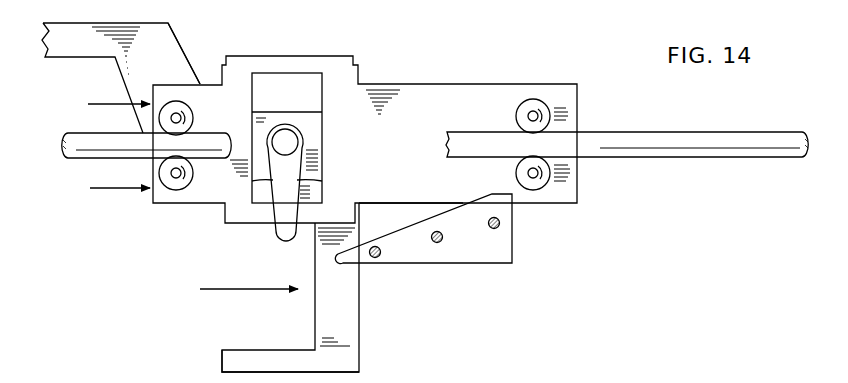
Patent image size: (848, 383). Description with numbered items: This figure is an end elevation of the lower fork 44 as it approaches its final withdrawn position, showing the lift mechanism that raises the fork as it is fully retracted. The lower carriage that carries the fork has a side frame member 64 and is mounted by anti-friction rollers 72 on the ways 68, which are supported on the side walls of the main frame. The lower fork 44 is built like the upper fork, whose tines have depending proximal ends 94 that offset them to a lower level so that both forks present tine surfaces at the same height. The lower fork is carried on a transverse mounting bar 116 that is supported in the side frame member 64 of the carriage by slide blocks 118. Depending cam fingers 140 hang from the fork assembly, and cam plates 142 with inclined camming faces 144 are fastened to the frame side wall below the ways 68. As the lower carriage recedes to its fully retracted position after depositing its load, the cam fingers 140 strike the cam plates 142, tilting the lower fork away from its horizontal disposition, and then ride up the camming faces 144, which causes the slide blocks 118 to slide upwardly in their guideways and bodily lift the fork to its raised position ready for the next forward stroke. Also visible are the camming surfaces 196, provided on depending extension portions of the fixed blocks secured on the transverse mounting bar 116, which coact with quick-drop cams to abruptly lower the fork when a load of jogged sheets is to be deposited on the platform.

The depending proximal ends 94 is at (173, 46).
The lower fork 44 is at (196, 58).
The side frame member 64 is at (398, 90).
The anti-friction rollers 72 is at (521, 104).
The ways 68 is at (612, 137).
The slide blocks 118 is at (278, 118).
The transverse mounting bar 116 is at (290, 140).
The cam fingers 140 is at (282, 223).
The cam plates 142 is at (456, 252).
The inclined camming faces 144 is at (405, 216).
The camming surfaces 196 is at (347, 348).